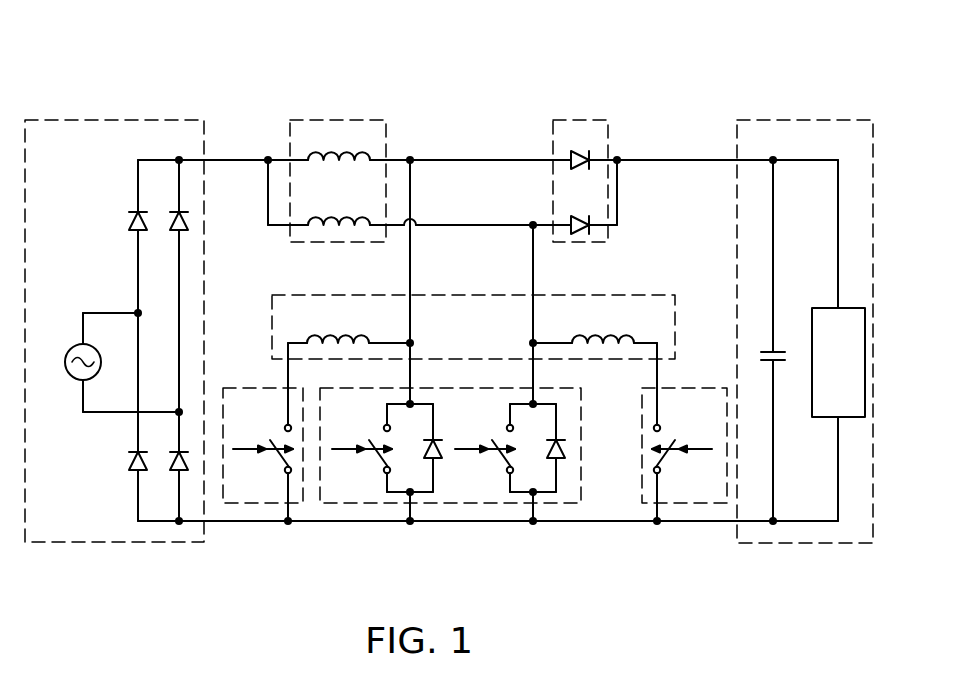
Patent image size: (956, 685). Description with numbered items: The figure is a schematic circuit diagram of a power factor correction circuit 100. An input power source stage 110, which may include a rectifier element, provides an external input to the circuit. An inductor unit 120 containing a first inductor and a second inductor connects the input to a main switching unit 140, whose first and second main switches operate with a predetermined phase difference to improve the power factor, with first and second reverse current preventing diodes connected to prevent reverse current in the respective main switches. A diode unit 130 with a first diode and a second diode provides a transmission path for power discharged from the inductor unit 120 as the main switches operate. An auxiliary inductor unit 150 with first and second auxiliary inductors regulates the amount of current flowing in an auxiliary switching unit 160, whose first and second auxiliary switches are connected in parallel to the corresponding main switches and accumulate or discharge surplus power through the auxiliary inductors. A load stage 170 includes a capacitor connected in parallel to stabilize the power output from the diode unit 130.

The power factor correction circuit 100 is at (449, 309).
The input power source stage 110 is at (168, 120).
The inductor unit 120 is at (350, 120).
The diode unit 130 is at (580, 120).
The main switching unit 140 is at (452, 505).
The auxiliary inductor unit 150 is at (640, 295).
The auxiliary switching unit 160 is at (257, 505).
The load stage 170 is at (822, 120).